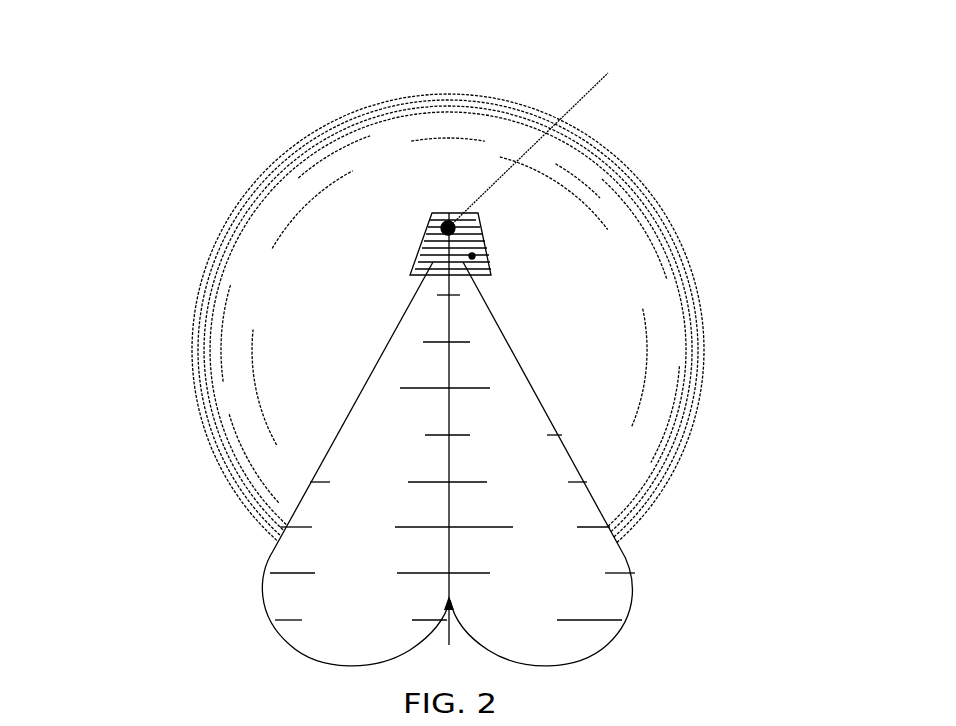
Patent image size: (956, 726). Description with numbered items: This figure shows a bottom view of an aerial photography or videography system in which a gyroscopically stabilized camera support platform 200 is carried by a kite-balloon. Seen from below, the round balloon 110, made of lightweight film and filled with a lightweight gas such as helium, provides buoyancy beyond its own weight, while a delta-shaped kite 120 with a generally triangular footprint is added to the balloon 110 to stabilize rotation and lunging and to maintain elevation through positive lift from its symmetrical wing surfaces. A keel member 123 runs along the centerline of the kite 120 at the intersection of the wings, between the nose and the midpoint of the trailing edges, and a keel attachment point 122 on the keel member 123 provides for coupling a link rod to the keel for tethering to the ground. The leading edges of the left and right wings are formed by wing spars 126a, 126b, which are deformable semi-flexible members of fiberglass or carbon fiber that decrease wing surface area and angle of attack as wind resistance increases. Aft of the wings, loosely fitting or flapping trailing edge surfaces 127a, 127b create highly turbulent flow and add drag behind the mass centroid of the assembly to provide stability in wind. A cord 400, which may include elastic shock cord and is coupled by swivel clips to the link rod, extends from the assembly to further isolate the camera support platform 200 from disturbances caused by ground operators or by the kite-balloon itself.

The balloon 110 is at (255, 182).
The kite 120 is at (678, 613).
The keel attachment point 122 is at (448, 253).
The keel member 123 is at (448, 503).
The left wing spar 126a is at (275, 553).
The right wing spar 126b is at (620, 549).
The left trailing edge surface 127a is at (292, 637).
The right trailing edge surface 127b is at (607, 638).
The gyroscopically stabilized camera support platform 200 is at (532, 230).
The cord 400 is at (606, 112).